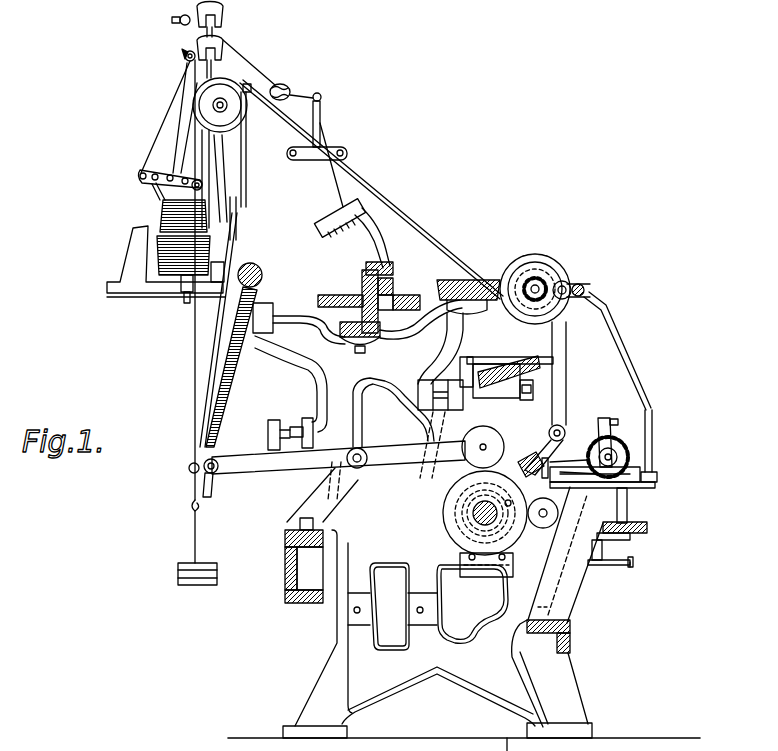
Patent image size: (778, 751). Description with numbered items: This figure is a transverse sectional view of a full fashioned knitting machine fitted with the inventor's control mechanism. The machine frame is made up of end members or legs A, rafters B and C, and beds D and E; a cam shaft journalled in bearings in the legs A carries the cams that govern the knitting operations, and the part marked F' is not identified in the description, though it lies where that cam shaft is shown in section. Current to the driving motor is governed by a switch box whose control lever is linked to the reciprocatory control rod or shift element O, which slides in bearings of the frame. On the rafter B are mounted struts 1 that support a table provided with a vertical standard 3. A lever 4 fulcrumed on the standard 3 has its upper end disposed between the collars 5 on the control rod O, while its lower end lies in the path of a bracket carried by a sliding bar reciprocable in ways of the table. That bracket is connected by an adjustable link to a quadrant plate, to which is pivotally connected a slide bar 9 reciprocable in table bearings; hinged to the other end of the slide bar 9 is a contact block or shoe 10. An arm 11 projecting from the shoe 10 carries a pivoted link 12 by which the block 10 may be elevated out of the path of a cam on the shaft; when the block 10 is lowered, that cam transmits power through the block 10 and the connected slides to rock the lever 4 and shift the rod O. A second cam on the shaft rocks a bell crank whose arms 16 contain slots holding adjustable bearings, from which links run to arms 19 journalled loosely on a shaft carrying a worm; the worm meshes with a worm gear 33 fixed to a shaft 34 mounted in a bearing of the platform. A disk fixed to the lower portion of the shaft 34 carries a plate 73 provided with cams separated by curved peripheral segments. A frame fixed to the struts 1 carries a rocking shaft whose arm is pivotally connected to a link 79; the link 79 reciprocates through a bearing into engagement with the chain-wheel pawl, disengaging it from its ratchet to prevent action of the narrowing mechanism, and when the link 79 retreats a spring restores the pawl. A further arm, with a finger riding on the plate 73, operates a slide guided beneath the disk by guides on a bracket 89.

The end members or legs A is at (327, 698).
The rafter B is at (572, 634).
The rafter C is at (290, 600).
The bed D is at (482, 283).
The bed E is at (362, 300).
The cam wheel F' is at (462, 524).
The reciprocatory control rod O is at (590, 284).
The struts 1 is at (560, 594).
The vertical standard 3 is at (648, 412).
The lever 4 is at (655, 437).
The collars 5 is at (590, 293).
The slide bar 9 is at (602, 535).
The contact block or shoe 10 is at (540, 470).
The arm 11 is at (542, 529).
The link 12 is at (575, 473).
The arms of bell crank 16 is at (545, 478).
The arms 19 is at (613, 437).
The worm gear 33 is at (662, 478).
The shaft 34 is at (627, 502).
The plate 73 is at (640, 522).
The link 79 is at (630, 570).
The bracket 89 is at (643, 533).